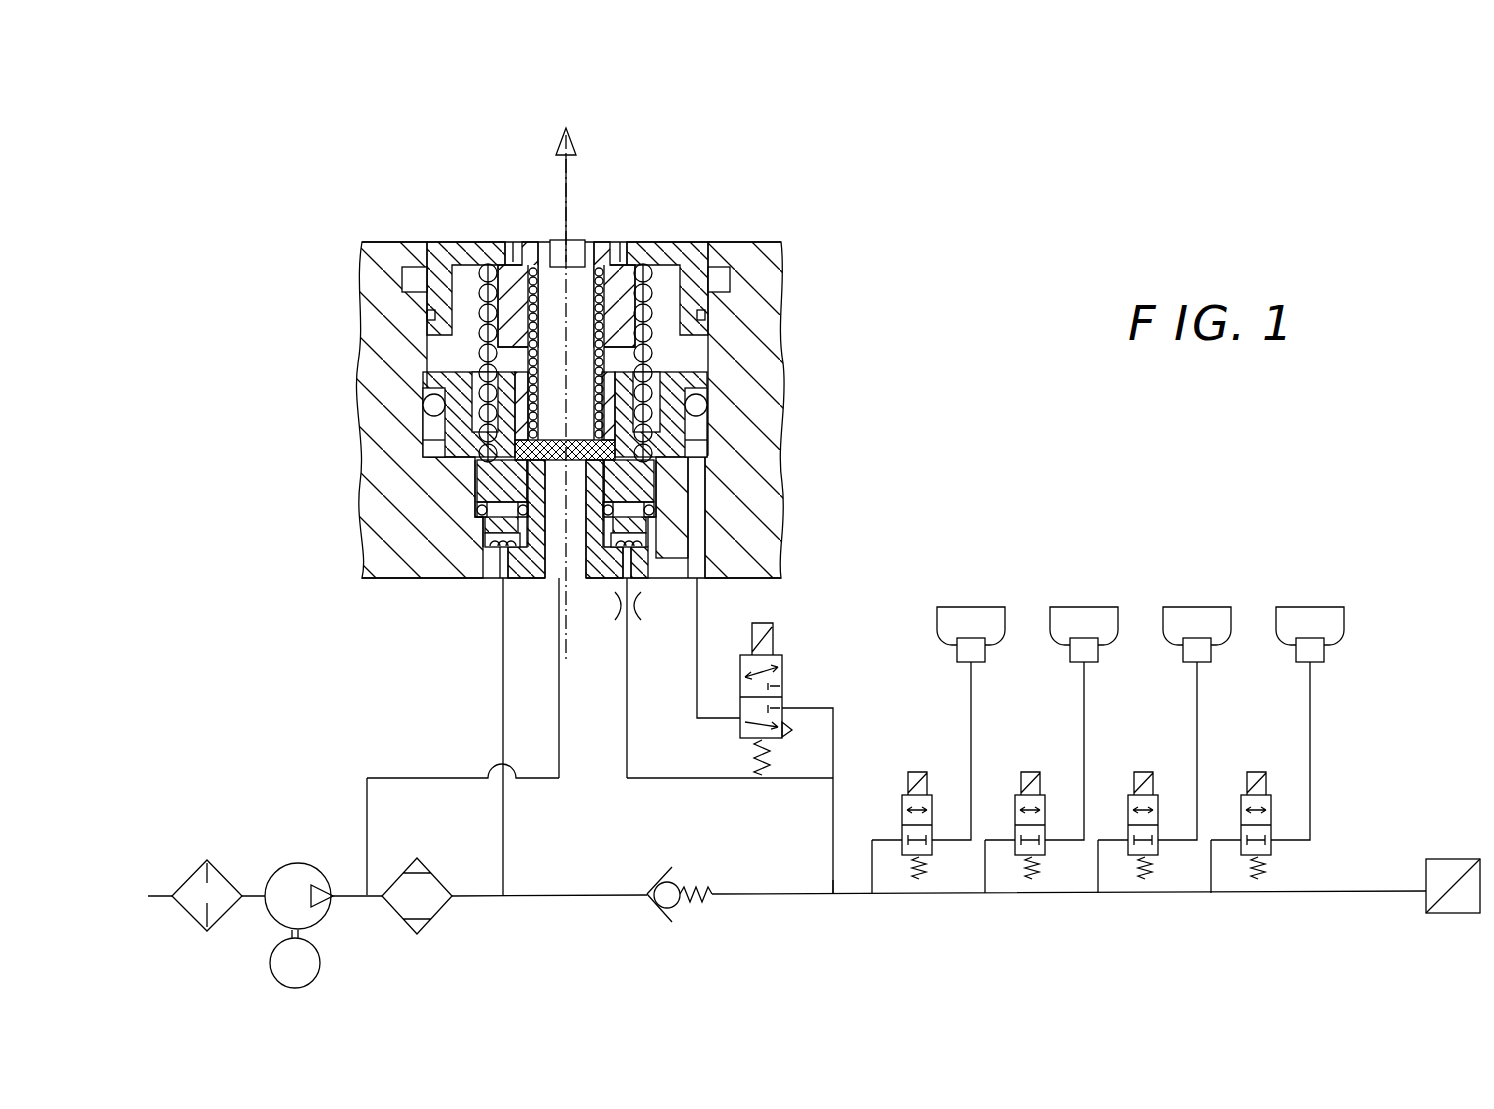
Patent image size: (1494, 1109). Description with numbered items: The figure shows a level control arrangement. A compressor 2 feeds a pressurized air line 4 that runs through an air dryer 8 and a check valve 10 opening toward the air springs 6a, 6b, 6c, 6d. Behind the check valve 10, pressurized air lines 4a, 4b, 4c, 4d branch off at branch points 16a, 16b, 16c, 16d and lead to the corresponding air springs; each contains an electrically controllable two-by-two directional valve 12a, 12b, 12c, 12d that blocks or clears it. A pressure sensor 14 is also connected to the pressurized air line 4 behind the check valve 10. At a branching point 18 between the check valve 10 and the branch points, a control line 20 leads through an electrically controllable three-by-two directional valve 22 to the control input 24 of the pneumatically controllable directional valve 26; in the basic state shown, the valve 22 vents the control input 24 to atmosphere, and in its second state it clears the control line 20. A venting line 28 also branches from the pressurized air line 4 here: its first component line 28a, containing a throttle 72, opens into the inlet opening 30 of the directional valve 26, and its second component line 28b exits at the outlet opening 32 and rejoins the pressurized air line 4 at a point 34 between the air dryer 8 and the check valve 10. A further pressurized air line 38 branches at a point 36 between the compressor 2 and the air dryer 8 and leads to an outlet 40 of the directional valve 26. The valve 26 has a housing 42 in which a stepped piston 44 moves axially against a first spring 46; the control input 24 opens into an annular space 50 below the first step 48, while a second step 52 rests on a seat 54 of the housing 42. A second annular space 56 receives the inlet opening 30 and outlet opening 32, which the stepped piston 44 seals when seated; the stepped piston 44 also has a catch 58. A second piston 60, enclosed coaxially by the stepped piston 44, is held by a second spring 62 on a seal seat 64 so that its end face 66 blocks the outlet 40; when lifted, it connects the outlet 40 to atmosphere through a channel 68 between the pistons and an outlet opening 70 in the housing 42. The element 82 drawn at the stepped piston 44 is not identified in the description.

The compressor 2 is at (299, 878).
The pressurized air line 4 is at (380, 897).
The air dryer 8 is at (415, 928).
The check valve 10 is at (663, 893).
The pressure sensor 14 is at (1443, 907).
The branching point 18 is at (830, 895).
The control line 20 is at (832, 830).
The electrically controllable 3/2 directional valve 22 is at (783, 685).
The control input 24 is at (697, 565).
The pneumatically controllable directional valve 26 is at (765, 315).
The venting line 28 is at (660, 780).
The first component line 28a is at (626, 725).
The second component line 28b is at (501, 735).
The inlet opening 30 is at (715, 560).
The outlet opening 32 is at (499, 565).
The point 34 is at (501, 897).
The point 36 is at (364, 898).
The pressurized air line 38 is at (407, 780).
The outlet 40 is at (557, 657).
The housing 42 is at (755, 262).
The stepped piston 44 is at (480, 512).
The first spring 46 is at (427, 347).
The first step 48 is at (712, 378).
The annular space 50 is at (668, 466).
The second step 52 is at (430, 460).
The seat 54 is at (655, 480).
The second annular space 56 is at (497, 560).
The catch 58 is at (655, 505).
The second piston 60 is at (612, 450).
The second spring 62 is at (529, 300).
The seal seat 64 is at (552, 560).
The end face 66 is at (566, 560).
The channel 68 is at (423, 410).
The outlet opening 70 is at (573, 255).
The throttle 72 is at (627, 605).
The left seal 82 is at (488, 542).
The pressurized air line 4a is at (971, 722).
The pressurized air line 4b is at (1084, 722).
The pressurized air line 4c is at (1197, 722).
The pressurized air line 4d is at (1310, 722).
The air spring 6a is at (957, 607).
The air spring 6b is at (1070, 607).
The air spring 6c is at (1183, 607).
The air spring 6d is at (1296, 607).
The electrically controllable 2/2 directional valve 12a is at (900, 830).
The electrically controllable 2/2 directional valve 12b is at (1013, 825).
The electrically controllable 2/2 directional valve 12c is at (1126, 825).
The electrically controllable 2/2 directional valve 12d is at (1239, 825).
The branch point 16a is at (872, 893).
The branch point 16b is at (985, 893).
The branch point 16c is at (1098, 893).
The branch point 16d is at (1211, 893).